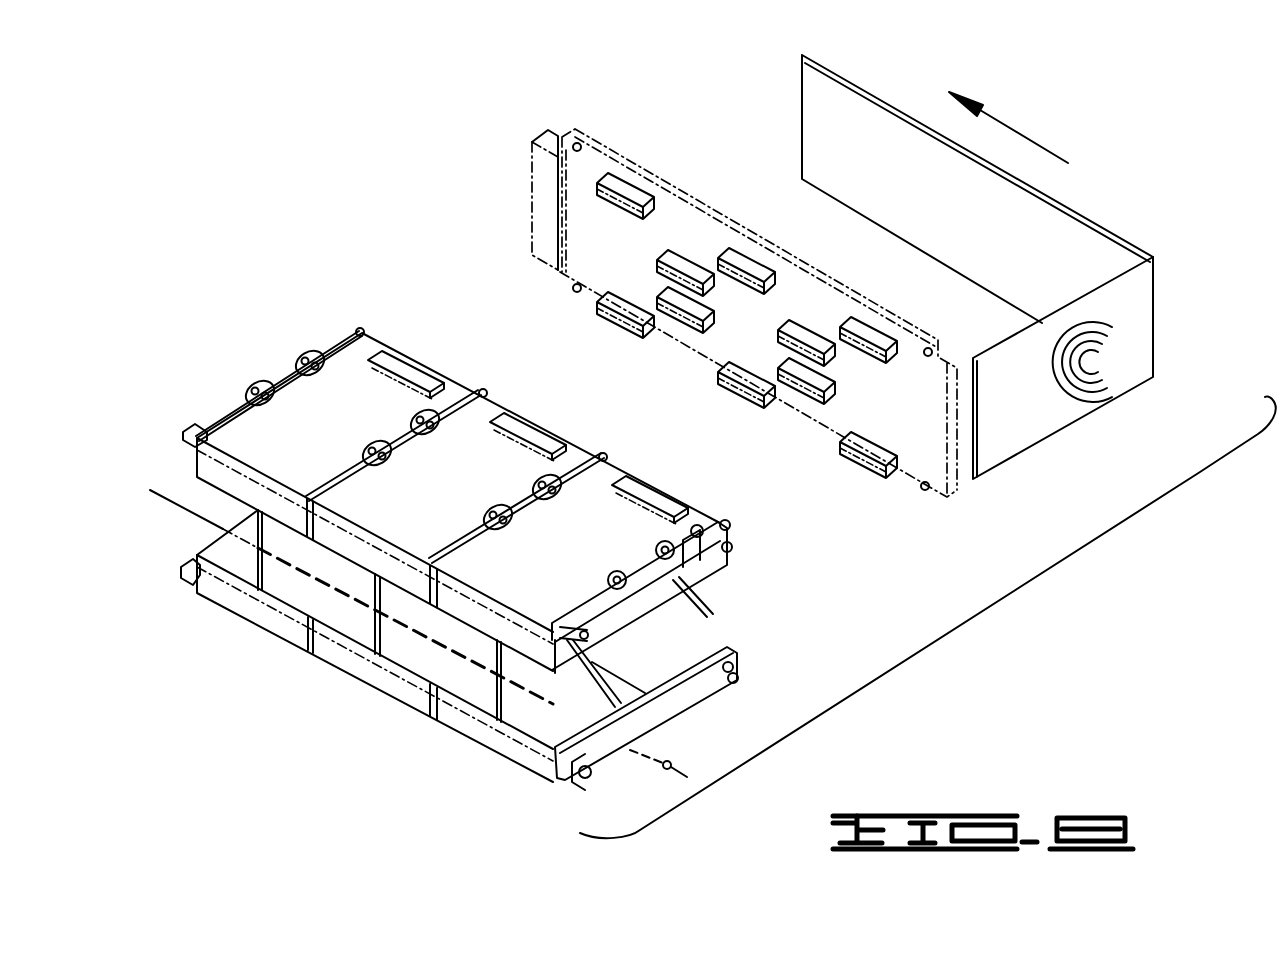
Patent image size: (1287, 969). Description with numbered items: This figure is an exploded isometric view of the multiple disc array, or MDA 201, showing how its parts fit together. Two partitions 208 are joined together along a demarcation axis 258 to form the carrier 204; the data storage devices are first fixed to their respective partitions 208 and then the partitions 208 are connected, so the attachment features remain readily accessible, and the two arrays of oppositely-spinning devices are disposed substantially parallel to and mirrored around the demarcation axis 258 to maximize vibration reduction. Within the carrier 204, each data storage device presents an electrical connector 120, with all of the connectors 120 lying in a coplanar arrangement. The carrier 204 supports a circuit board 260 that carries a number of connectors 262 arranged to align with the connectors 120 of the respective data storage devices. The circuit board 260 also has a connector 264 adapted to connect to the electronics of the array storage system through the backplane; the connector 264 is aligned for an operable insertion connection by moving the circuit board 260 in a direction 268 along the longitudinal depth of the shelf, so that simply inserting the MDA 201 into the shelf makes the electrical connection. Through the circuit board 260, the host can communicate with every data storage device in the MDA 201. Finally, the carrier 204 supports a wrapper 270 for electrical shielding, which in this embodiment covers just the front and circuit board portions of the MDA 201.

The connector 120 is at (415, 365).
The MDA 201 is at (950, 620).
The carrier 204 is at (242, 368).
The partition 208 is at (710, 562).
The demarcation axis 258 is at (672, 760).
The circuit board 260 is at (630, 160).
The connectors 262 is at (675, 255).
The connector 264 is at (540, 135).
The direction 268 is at (1012, 130).
The wrapper 270 is at (1128, 252).